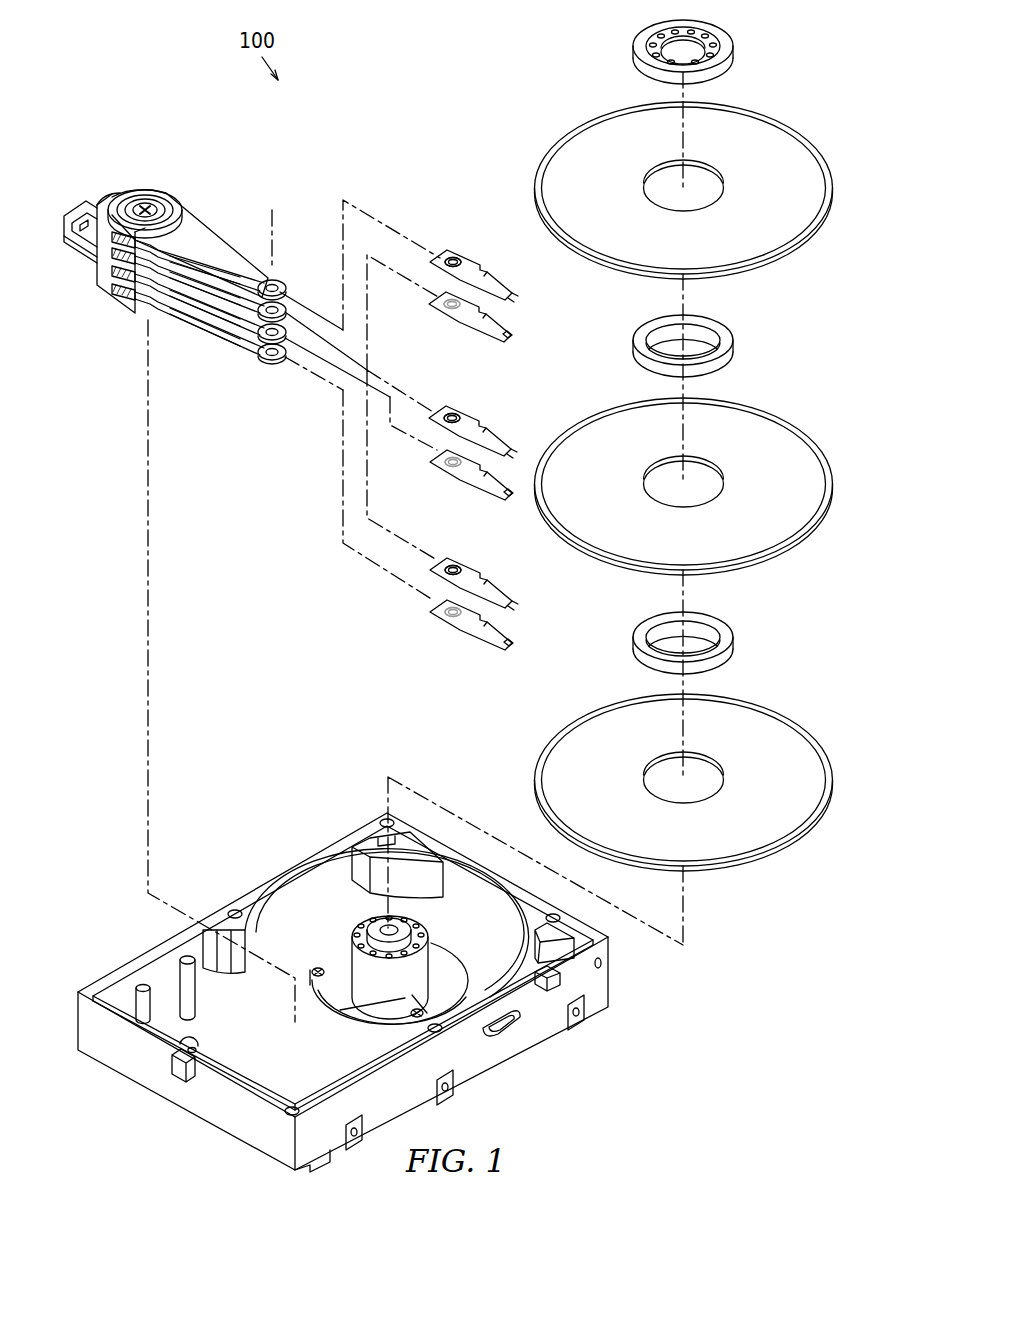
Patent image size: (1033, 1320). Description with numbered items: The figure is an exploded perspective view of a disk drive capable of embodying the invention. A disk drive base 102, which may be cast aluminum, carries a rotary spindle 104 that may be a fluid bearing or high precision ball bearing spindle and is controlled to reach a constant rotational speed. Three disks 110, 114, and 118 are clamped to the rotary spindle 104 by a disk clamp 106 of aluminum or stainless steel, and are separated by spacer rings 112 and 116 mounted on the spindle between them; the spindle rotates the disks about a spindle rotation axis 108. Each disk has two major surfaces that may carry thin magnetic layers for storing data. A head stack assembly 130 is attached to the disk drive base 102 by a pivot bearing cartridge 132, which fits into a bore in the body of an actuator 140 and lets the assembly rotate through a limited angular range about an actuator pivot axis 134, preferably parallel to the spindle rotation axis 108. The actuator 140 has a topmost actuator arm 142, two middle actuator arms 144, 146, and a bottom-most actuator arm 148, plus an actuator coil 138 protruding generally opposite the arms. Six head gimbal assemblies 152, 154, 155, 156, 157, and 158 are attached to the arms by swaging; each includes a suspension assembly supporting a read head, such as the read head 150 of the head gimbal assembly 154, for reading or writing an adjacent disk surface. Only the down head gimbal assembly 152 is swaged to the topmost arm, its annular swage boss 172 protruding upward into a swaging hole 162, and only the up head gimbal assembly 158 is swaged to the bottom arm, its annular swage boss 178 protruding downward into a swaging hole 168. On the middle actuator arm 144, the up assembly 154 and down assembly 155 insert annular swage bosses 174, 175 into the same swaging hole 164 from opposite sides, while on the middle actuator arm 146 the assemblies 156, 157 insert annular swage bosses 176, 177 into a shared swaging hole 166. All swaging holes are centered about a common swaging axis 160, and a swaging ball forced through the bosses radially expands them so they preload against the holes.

The disk drive base 102 is at (135, 1068).
The rotary spindle 104 is at (370, 1002).
The disk clamp 106 is at (733, 55).
The spindle rotation axis 108 is at (680, 293).
The disk 110 is at (751, 722).
The spacer ring 112 is at (733, 647).
The disk 114 is at (751, 428).
The spacer ring 116 is at (733, 350).
The disk 118 is at (751, 132).
The head stack assembly 130 is at (100, 286).
The pivot bearing cartridge 132 is at (146, 203).
The actuator pivot axis 134 is at (146, 492).
The actuator coil 138 is at (74, 217).
The actuator 140 is at (108, 205).
The topmost actuator arm 142 is at (187, 228).
The middle actuator arm 144 is at (197, 274).
The middle actuator arm 146 is at (185, 300).
The bottom-most actuator arm 148 is at (210, 325).
The read head 150 is at (512, 323).
The head gimbal assembly 152 is at (472, 278).
The head gimbal assembly 154 is at (460, 312).
The head gimbal assembly 155 is at (488, 440).
The head gimbal assembly 156 is at (453, 472).
The head gimbal assembly 157 is at (480, 588).
The head gimbal assembly 158 is at (458, 622).
The swaging axis 160 is at (274, 222).
The swaging hole 162 is at (276, 287).
The swaging hole 164 is at (284, 310).
The swaging hole 166 is at (258, 337).
The swaging hole 168 is at (272, 358).
The annular swage boss 172 is at (453, 258).
The annular swage boss 174 is at (443, 305).
The annular swage boss 175 is at (456, 415).
The annular swage boss 176 is at (443, 462).
The annular swage boss 177 is at (455, 566).
The annular swage boss 178 is at (443, 612).